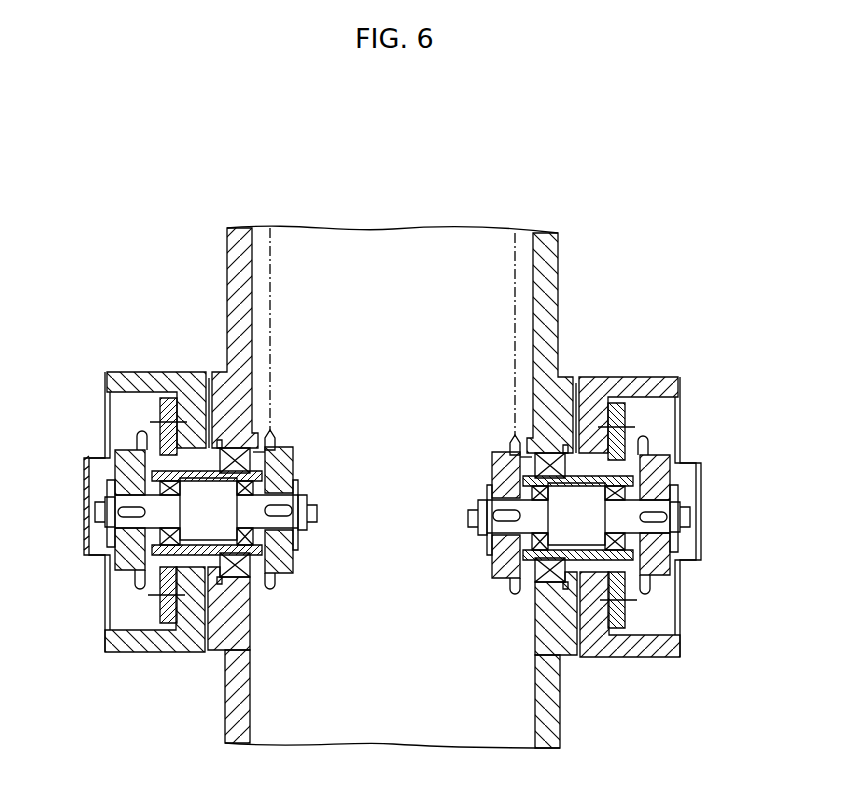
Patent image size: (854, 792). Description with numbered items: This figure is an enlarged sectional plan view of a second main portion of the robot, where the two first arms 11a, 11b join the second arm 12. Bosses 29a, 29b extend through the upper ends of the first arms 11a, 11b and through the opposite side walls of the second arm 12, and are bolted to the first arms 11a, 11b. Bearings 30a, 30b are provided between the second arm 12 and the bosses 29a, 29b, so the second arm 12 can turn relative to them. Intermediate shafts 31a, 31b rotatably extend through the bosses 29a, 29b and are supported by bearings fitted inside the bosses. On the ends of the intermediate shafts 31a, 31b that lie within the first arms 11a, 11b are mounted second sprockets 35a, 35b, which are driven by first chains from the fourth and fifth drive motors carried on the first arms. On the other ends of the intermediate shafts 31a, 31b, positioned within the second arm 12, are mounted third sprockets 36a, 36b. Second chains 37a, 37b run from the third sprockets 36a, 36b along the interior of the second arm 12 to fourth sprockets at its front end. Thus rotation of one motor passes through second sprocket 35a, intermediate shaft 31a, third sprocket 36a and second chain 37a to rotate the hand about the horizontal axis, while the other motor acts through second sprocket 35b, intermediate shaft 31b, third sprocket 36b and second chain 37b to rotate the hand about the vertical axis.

The second arm 12 is at (558, 240).
The first arm 11a is at (638, 555).
The first arm 11b is at (173, 645).
The boss 29a is at (613, 473).
The boss 29b is at (197, 453).
The bearing 30a is at (525, 558).
The bearing 30b is at (248, 605).
The intermediate shaft 31a is at (579, 514).
The intermediate shaft 31b is at (225, 525).
The second sprocket 35a is at (694, 543).
The second sprocket 35b is at (138, 586).
The third sprocket 36a is at (474, 534).
The third sprocket 36b is at (276, 585).
The second chain 37a is at (476, 344).
The second chain 37b is at (272, 336).